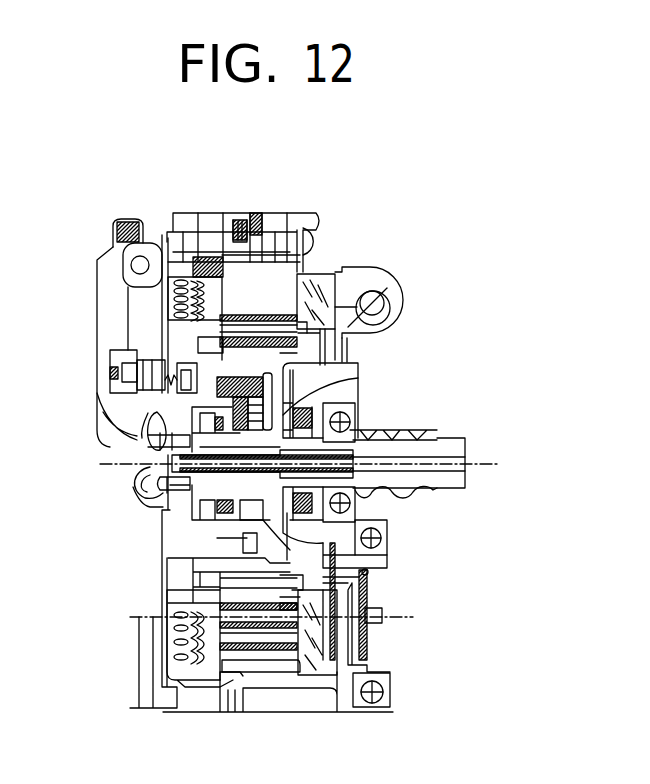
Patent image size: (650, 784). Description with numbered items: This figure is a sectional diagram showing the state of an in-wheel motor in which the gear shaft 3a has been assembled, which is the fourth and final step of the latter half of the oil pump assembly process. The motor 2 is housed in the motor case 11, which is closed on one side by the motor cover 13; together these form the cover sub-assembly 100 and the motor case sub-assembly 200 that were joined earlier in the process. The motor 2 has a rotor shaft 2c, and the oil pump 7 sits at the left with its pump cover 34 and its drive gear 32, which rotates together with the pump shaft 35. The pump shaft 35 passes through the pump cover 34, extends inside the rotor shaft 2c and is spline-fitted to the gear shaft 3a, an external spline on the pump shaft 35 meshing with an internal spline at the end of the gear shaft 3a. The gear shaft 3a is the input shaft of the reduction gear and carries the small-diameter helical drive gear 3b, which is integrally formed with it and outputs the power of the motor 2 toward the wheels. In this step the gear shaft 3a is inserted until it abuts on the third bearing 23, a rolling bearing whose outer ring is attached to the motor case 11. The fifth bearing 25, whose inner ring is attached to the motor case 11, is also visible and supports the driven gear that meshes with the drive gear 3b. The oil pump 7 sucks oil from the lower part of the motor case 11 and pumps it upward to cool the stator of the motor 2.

The motor 2 is at (345, 234).
The motor case 11 is at (370, 272).
The motor cover 13 is at (165, 326).
The oil pump 7 is at (112, 446).
The pump cover 34 is at (167, 408).
The drive gear 32 is at (160, 509).
The rotor shaft 2c is at (360, 376).
The third bearing 23 is at (357, 415).
The gear shaft 3a is at (453, 438).
The drive gear 3b is at (398, 492).
The fifth bearing 25 is at (388, 526).
The pump shaft 35 is at (368, 577).
The cover sub-assembly 100 is at (177, 713).
The motor case sub-assembly 200 is at (272, 713).